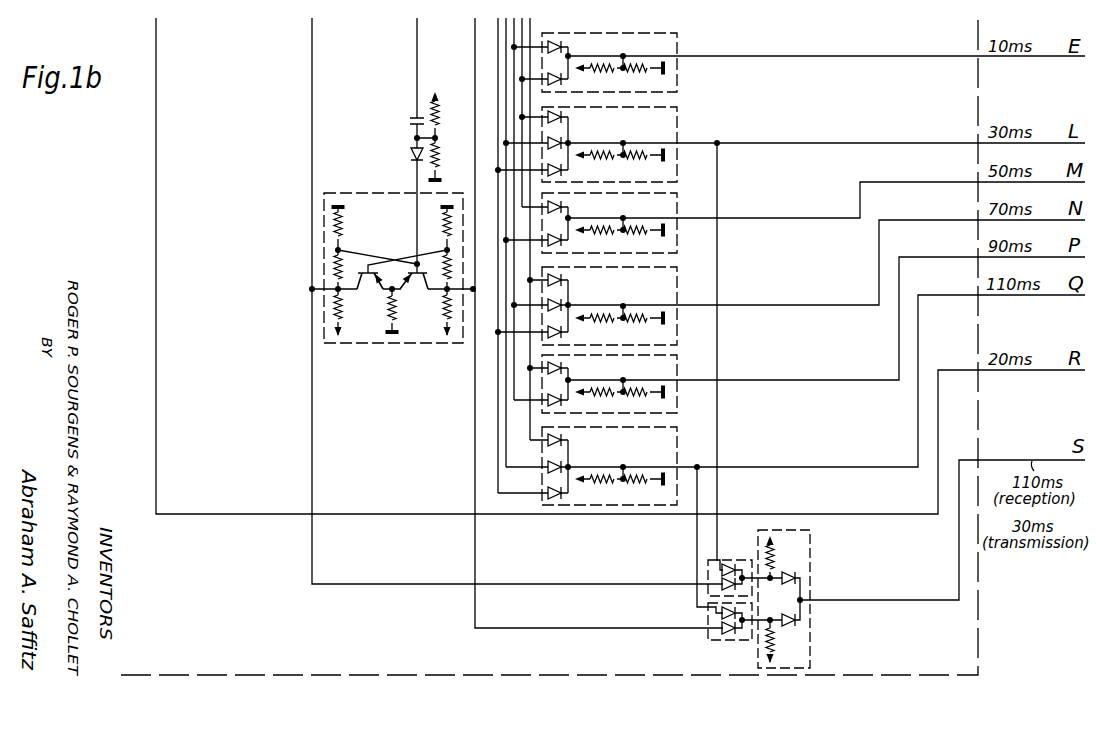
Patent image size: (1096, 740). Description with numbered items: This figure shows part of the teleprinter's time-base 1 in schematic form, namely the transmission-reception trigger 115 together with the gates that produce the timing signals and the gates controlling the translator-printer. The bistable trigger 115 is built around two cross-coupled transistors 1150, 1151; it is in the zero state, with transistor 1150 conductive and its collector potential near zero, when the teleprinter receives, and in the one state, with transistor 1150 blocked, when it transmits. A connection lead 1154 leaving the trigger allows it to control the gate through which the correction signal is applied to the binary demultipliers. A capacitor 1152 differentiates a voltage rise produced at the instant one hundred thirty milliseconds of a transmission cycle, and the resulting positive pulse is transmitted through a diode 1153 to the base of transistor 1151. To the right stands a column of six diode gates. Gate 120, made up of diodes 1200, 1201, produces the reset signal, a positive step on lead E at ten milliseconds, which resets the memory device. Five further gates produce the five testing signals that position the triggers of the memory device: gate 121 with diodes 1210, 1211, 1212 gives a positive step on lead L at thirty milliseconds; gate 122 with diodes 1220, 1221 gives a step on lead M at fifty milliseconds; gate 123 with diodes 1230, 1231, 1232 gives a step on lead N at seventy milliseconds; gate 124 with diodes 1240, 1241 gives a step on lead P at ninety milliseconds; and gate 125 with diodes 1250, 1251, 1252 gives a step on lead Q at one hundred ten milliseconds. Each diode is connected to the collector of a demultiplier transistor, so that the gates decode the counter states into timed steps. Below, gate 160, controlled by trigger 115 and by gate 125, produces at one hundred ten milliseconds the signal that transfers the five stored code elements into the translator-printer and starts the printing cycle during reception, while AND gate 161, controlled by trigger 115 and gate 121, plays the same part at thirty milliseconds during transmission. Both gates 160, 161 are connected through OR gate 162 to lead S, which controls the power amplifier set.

The time-base 1 is at (978, 636).
The transmission-reception trigger 115 is at (392, 254).
The transistor 1150 is at (368, 282).
The transistor 1151 is at (417, 282).
The capacitor 1152 is at (410, 117).
The diode 1153 is at (410, 153).
The connection lead 1154 is at (312, 173).
The gate 120 is at (798, 65).
The diode 1200 is at (563, 41).
The diode 1201 is at (563, 84).
The gate 121 is at (790, 146).
The diode 1210 is at (563, 111).
The diode 1211 is at (563, 138).
The diode 1212 is at (563, 175).
The gate 122 is at (794, 220).
The diode 1220 is at (563, 201).
The diode 1221 is at (563, 245).
The gate 123 is at (790, 285).
The diode 1230 is at (563, 274).
The diode 1231 is at (563, 300).
The diode 1232 is at (563, 337).
The gate 124 is at (799, 338).
The diode 1240 is at (563, 362).
The diode 1241 is at (563, 405).
The gate 125 is at (791, 400).
The diode 1250 is at (563, 434).
The diode 1251 is at (563, 462).
The diode 1252 is at (563, 498).
The gate 160 is at (733, 641).
The AND gate 161 is at (733, 559).
The OR gate 162 is at (810, 545).